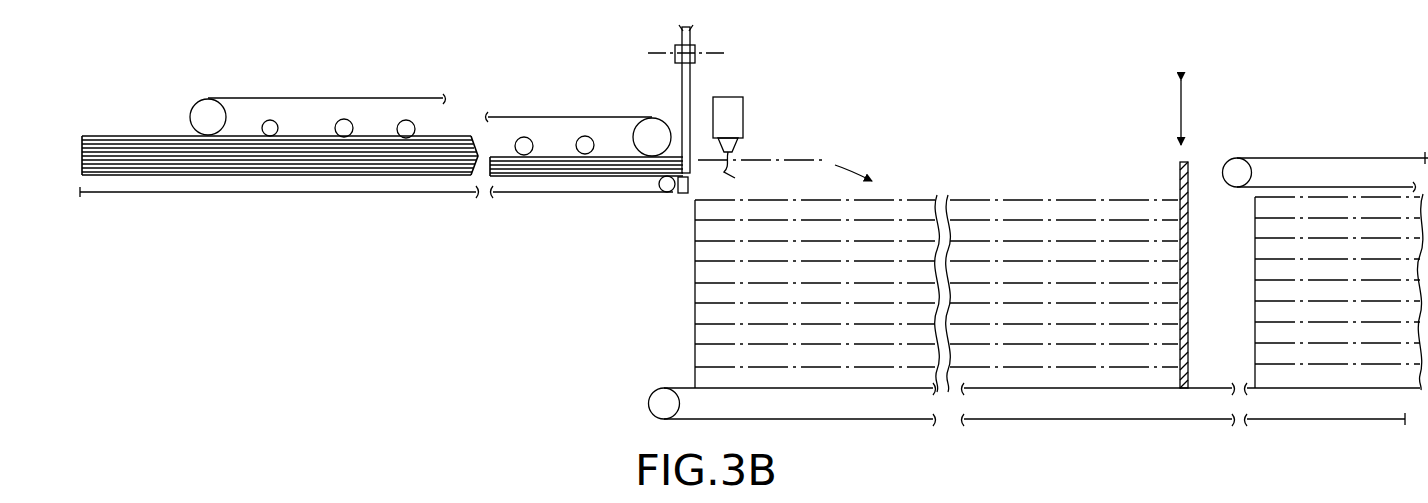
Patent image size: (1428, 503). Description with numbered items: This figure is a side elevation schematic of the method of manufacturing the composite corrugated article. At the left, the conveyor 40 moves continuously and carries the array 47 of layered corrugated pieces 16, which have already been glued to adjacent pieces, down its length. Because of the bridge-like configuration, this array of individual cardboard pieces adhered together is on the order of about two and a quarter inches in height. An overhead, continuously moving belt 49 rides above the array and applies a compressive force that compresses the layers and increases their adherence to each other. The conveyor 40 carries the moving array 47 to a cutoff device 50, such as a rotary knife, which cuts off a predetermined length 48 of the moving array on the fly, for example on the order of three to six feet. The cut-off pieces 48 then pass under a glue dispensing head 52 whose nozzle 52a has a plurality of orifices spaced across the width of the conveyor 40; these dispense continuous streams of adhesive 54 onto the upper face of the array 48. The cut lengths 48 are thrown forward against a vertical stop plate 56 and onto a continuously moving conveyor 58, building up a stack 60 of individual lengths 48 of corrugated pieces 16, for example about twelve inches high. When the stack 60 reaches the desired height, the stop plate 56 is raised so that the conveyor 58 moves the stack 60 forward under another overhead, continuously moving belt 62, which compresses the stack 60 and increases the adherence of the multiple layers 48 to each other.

The individual pieces 16 is at (108, 152).
The conveyor 40 is at (127, 178).
The array 47 is at (156, 132).
The predetermined length 48 is at (1023, 185).
The overhead continuously moving belt 49 is at (450, 100).
The cutoff device 50 is at (694, 77).
The glue dispensing head 52 is at (749, 103).
The nozzle 52a is at (736, 147).
The adhesive 54 is at (747, 173).
The vertical stop plate 56 is at (1179, 190).
The continuously moving conveyor 58 is at (1275, 389).
The stack 60 is at (1357, 210).
The overhead continuously moving belt 62 is at (1282, 186).